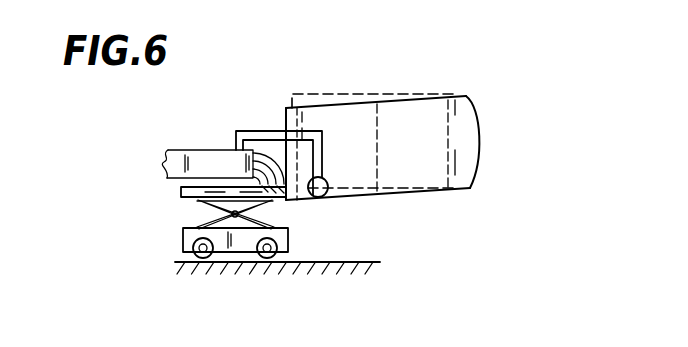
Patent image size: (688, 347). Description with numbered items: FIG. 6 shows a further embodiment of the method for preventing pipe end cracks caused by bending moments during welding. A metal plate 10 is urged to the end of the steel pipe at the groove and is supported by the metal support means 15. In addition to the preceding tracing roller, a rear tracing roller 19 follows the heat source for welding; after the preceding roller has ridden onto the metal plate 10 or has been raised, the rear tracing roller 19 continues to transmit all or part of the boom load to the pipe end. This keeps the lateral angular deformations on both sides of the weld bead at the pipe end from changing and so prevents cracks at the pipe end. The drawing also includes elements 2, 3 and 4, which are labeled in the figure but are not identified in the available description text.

The container 2 is at (457, 151).
The discharge conduit elbow 3 is at (277, 183).
The conveyor tube 4 is at (165, 161).
The metal plate 10 is at (181, 186).
The metal support means 15 is at (202, 213).
The rear tracing roller 19 is at (323, 193).